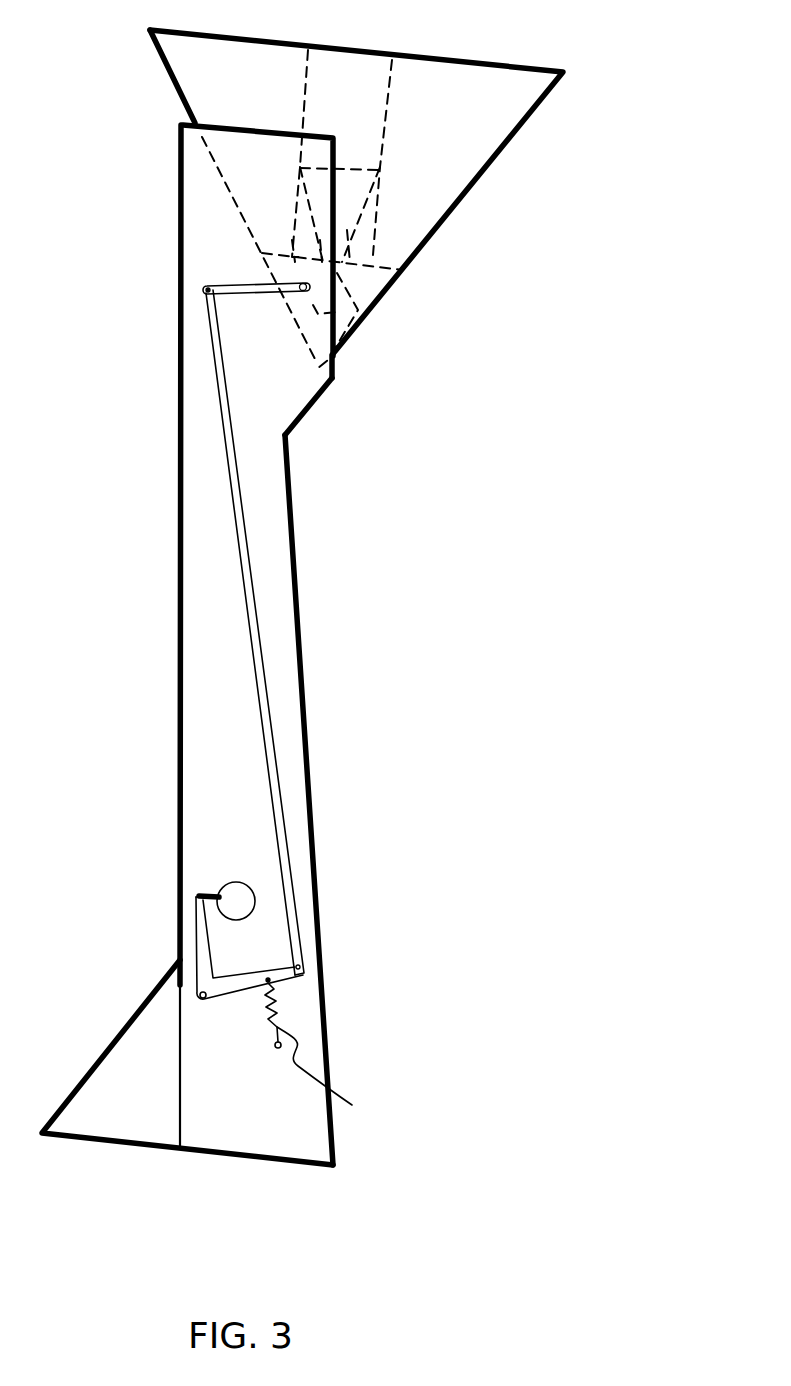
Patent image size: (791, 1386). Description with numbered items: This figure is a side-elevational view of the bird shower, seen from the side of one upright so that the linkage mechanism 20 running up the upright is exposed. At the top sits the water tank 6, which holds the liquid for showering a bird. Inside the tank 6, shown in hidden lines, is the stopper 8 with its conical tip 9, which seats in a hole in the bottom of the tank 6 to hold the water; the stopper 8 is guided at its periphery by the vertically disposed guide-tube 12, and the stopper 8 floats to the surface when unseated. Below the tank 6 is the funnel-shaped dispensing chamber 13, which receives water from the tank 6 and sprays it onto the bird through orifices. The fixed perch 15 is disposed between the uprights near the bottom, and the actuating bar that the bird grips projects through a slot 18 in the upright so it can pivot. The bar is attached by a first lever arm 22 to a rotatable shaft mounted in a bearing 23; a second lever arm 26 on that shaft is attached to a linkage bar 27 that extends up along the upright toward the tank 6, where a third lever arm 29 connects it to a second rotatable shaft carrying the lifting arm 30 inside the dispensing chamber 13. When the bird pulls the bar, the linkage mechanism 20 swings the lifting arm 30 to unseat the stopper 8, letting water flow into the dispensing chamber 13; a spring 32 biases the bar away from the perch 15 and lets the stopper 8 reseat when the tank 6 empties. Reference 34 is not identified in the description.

The water tank 6 is at (538, 112).
The stopper 8 is at (377, 227).
The conical tip 9 is at (385, 300).
The guide-tube 12 is at (392, 91).
The dispensing chamber 13 is at (358, 313).
The perch 15 is at (250, 918).
The slot 18 is at (197, 896).
The linkage mechanism 20 is at (275, 675).
The first lever arm 22 is at (197, 955).
The bearing 23 is at (198, 1002).
The second lever arm 26 is at (287, 977).
The linkage bar 27 is at (273, 775).
The third lever arm 29 is at (231, 280).
The lifting arm 30 is at (340, 372).
The spring 32 is at (338, 1078).
The side wall 34 is at (270, 483).